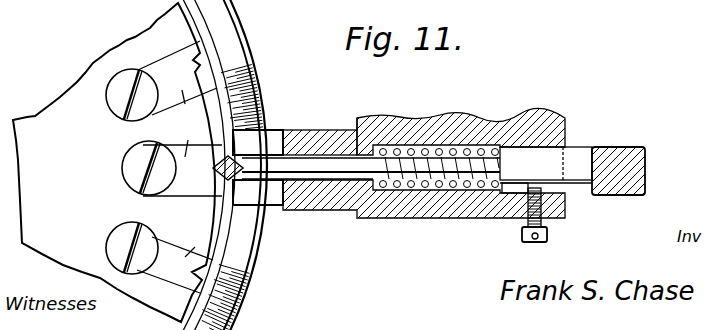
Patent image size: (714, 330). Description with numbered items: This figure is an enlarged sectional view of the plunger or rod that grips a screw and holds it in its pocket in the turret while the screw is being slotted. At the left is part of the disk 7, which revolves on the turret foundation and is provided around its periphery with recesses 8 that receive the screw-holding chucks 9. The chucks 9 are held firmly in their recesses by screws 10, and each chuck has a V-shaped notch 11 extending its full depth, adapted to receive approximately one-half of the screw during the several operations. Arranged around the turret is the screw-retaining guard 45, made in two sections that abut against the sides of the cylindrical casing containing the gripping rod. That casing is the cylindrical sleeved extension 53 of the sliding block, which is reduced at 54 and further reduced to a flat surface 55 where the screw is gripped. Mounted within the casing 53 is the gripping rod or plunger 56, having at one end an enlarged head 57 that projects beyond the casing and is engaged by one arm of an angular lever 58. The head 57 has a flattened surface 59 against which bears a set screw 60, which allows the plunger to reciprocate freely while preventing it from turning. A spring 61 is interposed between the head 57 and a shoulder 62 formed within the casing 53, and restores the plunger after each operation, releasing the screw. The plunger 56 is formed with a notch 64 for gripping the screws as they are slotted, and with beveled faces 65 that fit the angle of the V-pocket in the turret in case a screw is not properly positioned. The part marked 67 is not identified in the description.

The disk 7 is at (114, 162).
The recesses 8 is at (153, 61).
The screw-holding chucks 9 is at (179, 191).
The screws 10 is at (138, 110).
The V-shaped notches 11 is at (200, 62).
The screw-retaining guard 45 is at (247, 102).
The cylindrical sleeved extension 53 is at (461, 122).
The reduced portion 54 is at (303, 147).
The flat surface 55 is at (262, 197).
The gripping rod or plunger 56 is at (432, 190).
The enlarged head 57 is at (577, 158).
The angular lever 58 is at (640, 176).
The flattened surface 59 is at (551, 195).
The set screw 60 is at (526, 242).
The spring 61 is at (448, 160).
The shoulder 62 is at (360, 138).
The notch 64 is at (371, 168).
The beveled faces 65 is at (216, 178).
The upper bracket 67 is at (250, 155).